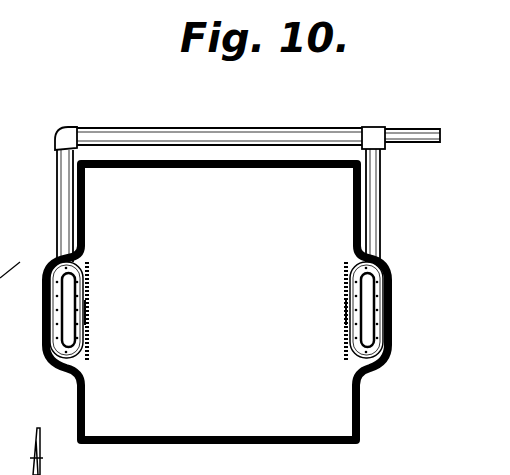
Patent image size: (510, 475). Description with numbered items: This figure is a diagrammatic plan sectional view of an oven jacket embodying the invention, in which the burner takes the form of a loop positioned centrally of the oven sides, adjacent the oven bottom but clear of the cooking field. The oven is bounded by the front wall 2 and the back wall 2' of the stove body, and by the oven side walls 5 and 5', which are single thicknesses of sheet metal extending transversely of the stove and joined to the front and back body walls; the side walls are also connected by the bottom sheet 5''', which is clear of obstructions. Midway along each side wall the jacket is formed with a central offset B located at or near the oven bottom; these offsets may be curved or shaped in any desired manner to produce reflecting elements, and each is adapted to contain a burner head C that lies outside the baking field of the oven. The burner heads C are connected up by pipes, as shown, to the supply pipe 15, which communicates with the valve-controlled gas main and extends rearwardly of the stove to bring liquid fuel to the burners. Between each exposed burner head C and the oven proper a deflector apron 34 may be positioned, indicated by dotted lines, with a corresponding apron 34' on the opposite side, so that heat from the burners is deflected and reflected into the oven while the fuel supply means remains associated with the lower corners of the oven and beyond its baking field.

The supply pipe 15 is at (313, 128).
The front wall 2 is at (217, 319).
The back wall 2' is at (210, 176).
The oven side wall 5 is at (88, 205).
The oven side wall 5' is at (203, 322).
The bottom sheet 5''' is at (200, 372).
The deflector aprons 34 is at (216, 312).
The packing strip 34' is at (15, 261).
The central offsets B is at (43, 337).
The burner heads C is at (85, 312).